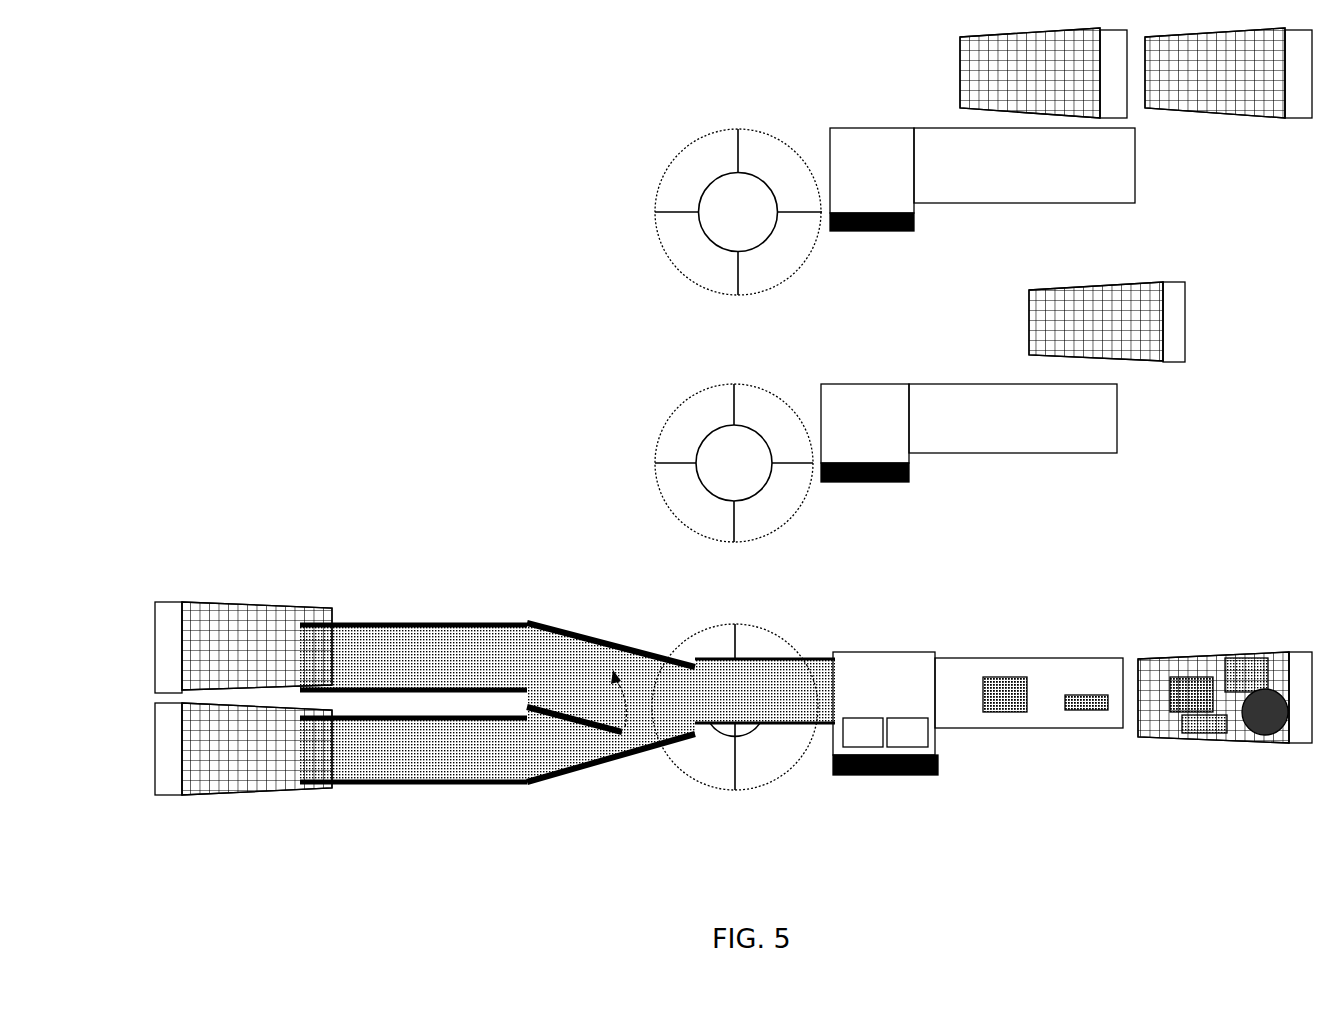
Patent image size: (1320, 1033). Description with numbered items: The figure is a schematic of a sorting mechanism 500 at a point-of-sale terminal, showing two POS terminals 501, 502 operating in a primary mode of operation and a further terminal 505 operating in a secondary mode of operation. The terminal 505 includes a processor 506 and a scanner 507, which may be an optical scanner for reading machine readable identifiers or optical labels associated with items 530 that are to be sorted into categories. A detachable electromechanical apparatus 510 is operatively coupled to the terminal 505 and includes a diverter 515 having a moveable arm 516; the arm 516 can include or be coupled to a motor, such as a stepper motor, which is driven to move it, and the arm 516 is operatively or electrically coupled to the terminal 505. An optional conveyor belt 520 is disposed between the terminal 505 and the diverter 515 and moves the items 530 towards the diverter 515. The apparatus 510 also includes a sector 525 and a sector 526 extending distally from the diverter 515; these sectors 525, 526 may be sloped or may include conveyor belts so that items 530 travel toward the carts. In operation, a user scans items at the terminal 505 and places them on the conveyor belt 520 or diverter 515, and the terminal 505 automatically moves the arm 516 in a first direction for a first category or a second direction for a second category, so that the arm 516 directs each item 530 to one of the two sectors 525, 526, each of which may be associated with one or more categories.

The retail store checkout system 500 is at (538, 62).
The POS terminal 501 is at (1214, 185).
The POS terminal 502 is at (1196, 435).
The POS terminal 505 is at (885, 713).
The processor 506 is at (863, 732).
The scanner 507 is at (907, 732).
The detachable electromechanical apparatus 510 is at (544, 542).
The diverter 515 is at (628, 645).
The moveable arm 516 is at (587, 733).
The conveyor belt 520 is at (773, 680).
The sector 525 is at (437, 770).
The sector 526 is at (413, 648).
The items 530 is at (1085, 710).